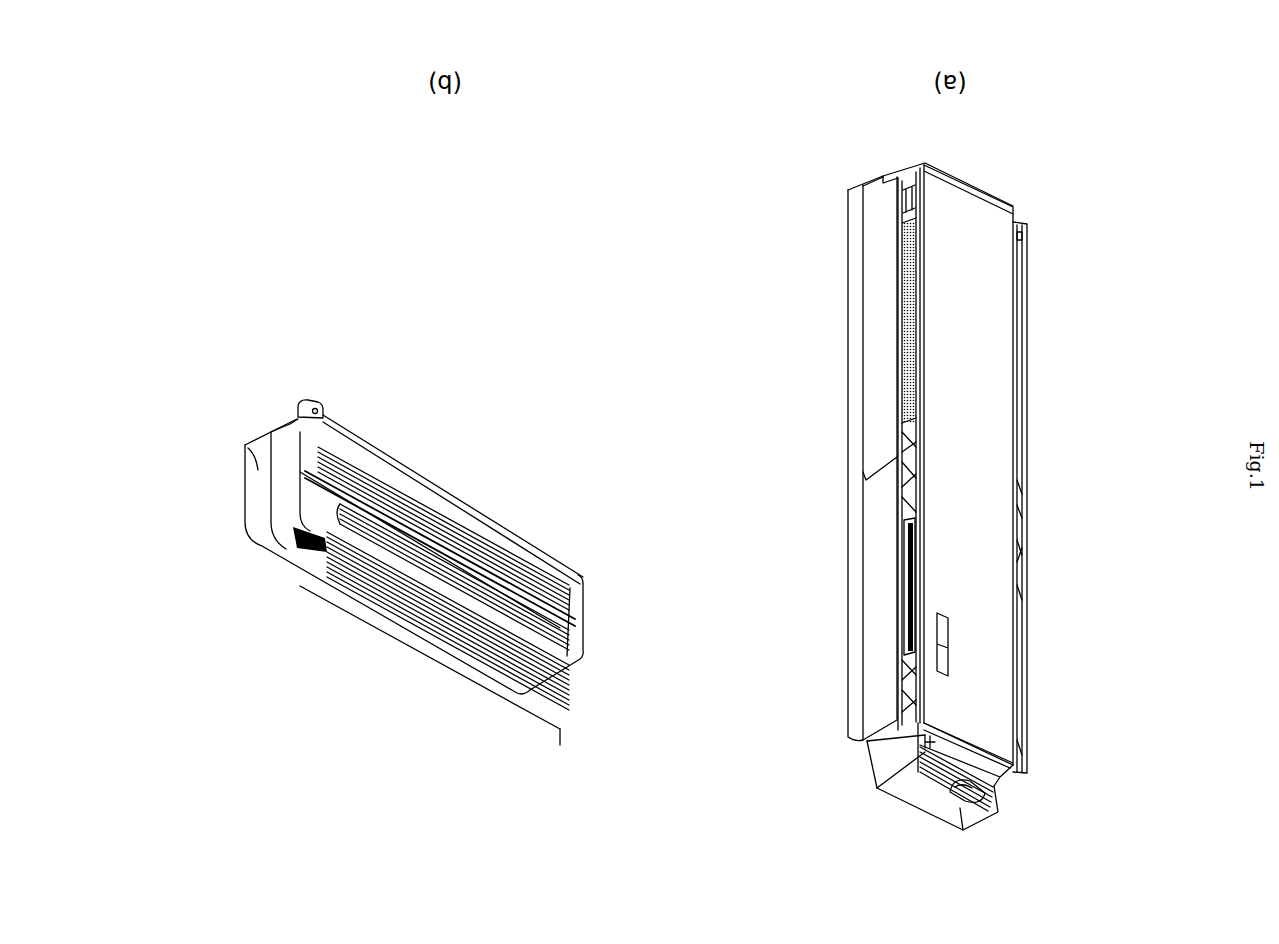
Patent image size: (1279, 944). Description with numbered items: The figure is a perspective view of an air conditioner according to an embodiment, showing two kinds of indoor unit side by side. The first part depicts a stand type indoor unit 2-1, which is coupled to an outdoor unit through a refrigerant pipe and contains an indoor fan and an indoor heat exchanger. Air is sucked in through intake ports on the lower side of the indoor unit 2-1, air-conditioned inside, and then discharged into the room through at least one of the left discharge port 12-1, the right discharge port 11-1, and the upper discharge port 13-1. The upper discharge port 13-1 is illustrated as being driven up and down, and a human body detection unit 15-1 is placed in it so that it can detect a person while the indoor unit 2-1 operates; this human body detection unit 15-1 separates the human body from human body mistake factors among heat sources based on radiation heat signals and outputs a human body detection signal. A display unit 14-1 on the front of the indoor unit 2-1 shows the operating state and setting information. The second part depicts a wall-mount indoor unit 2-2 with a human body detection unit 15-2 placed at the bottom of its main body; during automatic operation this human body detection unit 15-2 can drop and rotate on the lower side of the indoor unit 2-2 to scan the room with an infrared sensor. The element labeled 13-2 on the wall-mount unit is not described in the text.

The indoor unit 2-1 is at (830, 806).
The right discharge port 11-1 is at (883, 604).
The left discharge port 12-1 is at (1025, 627).
The upper discharge port 13-1 is at (995, 793).
The display unit 14-1 is at (940, 662).
The human body detection unit 15-1 is at (963, 786).
The indoor unit 2-2 is at (252, 573).
The discharge portion 13-2 is at (302, 433).
The human body detection unit 15-2 is at (298, 406).